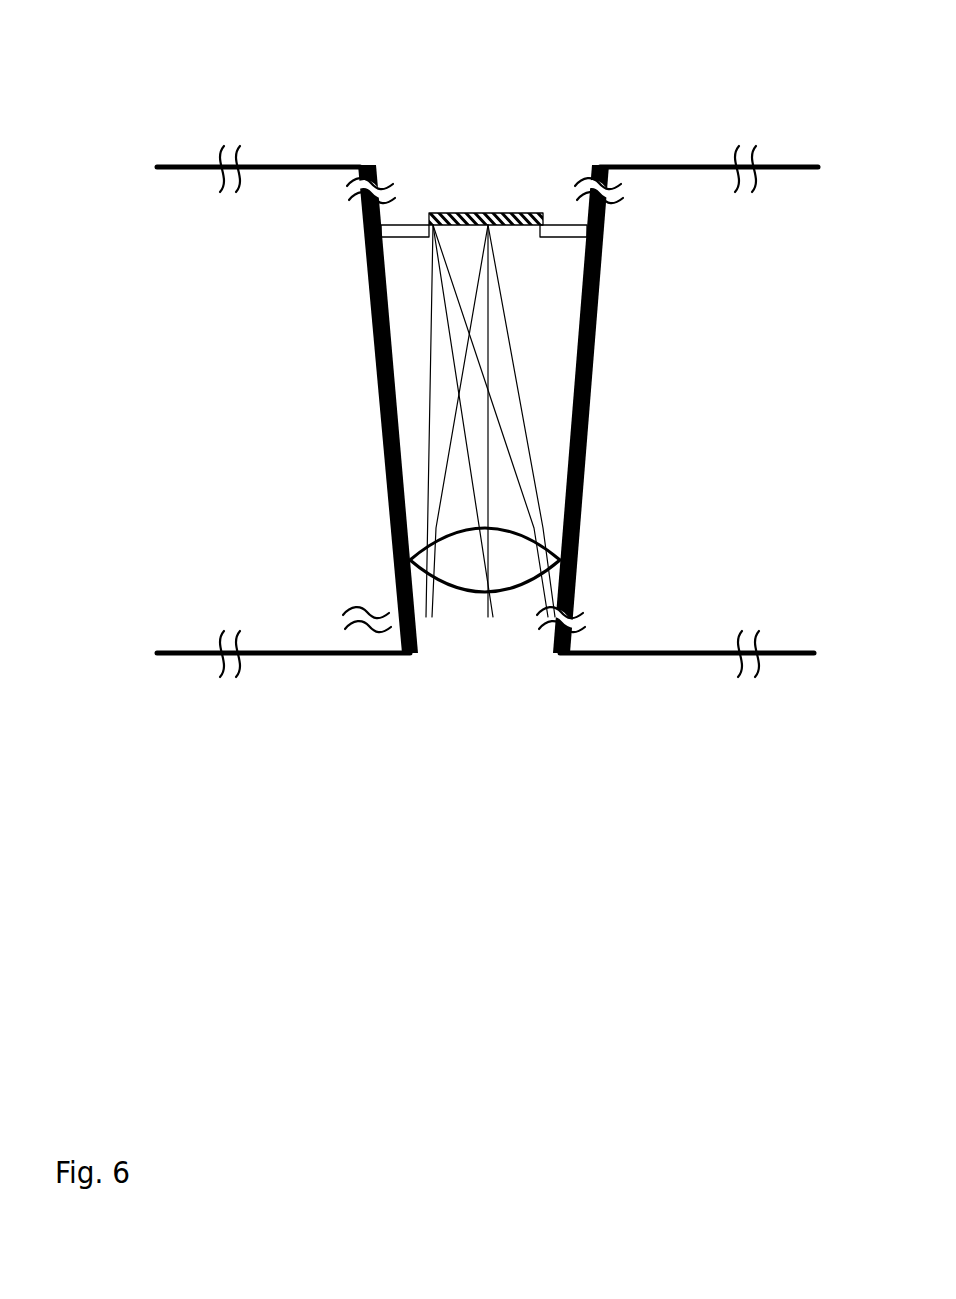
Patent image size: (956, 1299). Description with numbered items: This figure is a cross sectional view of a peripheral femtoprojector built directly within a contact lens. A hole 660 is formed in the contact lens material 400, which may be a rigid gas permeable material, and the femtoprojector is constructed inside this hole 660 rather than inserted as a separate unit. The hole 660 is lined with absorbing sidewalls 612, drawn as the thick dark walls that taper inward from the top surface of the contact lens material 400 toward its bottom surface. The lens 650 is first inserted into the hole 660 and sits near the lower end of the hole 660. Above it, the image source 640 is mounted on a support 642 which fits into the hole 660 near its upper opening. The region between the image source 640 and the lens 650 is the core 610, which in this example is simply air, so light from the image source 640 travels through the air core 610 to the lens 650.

The contact lens material 400 is at (302, 397).
The core 610 is at (553, 311).
The absorbing sidewalls 612 is at (604, 165).
The image source 640 is at (488, 213).
The support 642 is at (568, 232).
The lens 650 is at (533, 568).
The hole 660 is at (396, 182).